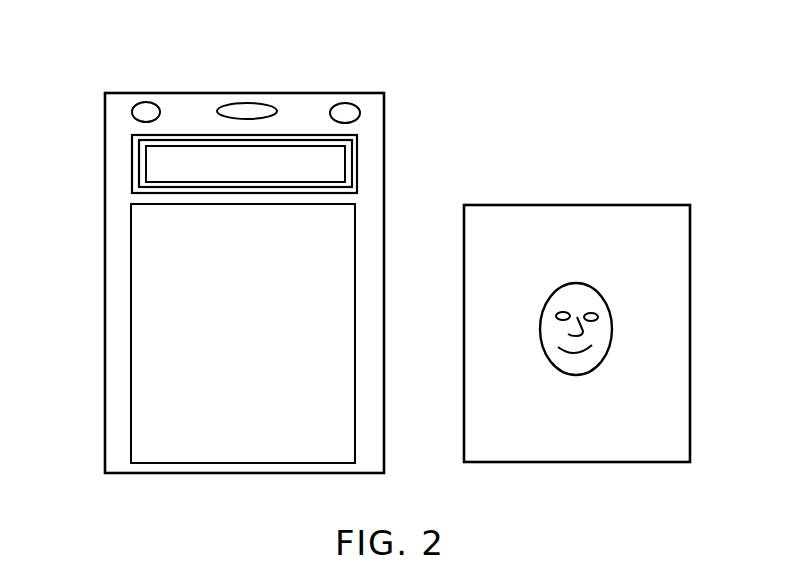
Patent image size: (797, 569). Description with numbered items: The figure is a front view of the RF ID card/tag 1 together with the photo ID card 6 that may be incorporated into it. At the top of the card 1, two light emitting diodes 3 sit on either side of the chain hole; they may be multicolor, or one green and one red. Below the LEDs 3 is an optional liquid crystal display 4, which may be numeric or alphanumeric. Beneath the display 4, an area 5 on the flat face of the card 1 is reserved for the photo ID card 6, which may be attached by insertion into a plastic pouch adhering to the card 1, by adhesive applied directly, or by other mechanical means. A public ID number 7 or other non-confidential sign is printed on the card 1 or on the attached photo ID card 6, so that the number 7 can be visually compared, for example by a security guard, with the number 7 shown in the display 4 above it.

The RF ID card/tag 1 is at (105, 267).
The light emitting diodes 3 is at (132, 109).
The LCD display 4 is at (352, 163).
The area 5 is at (151, 425).
The photo ID card 6 is at (690, 340).
The public ID number 7 is at (188, 150).